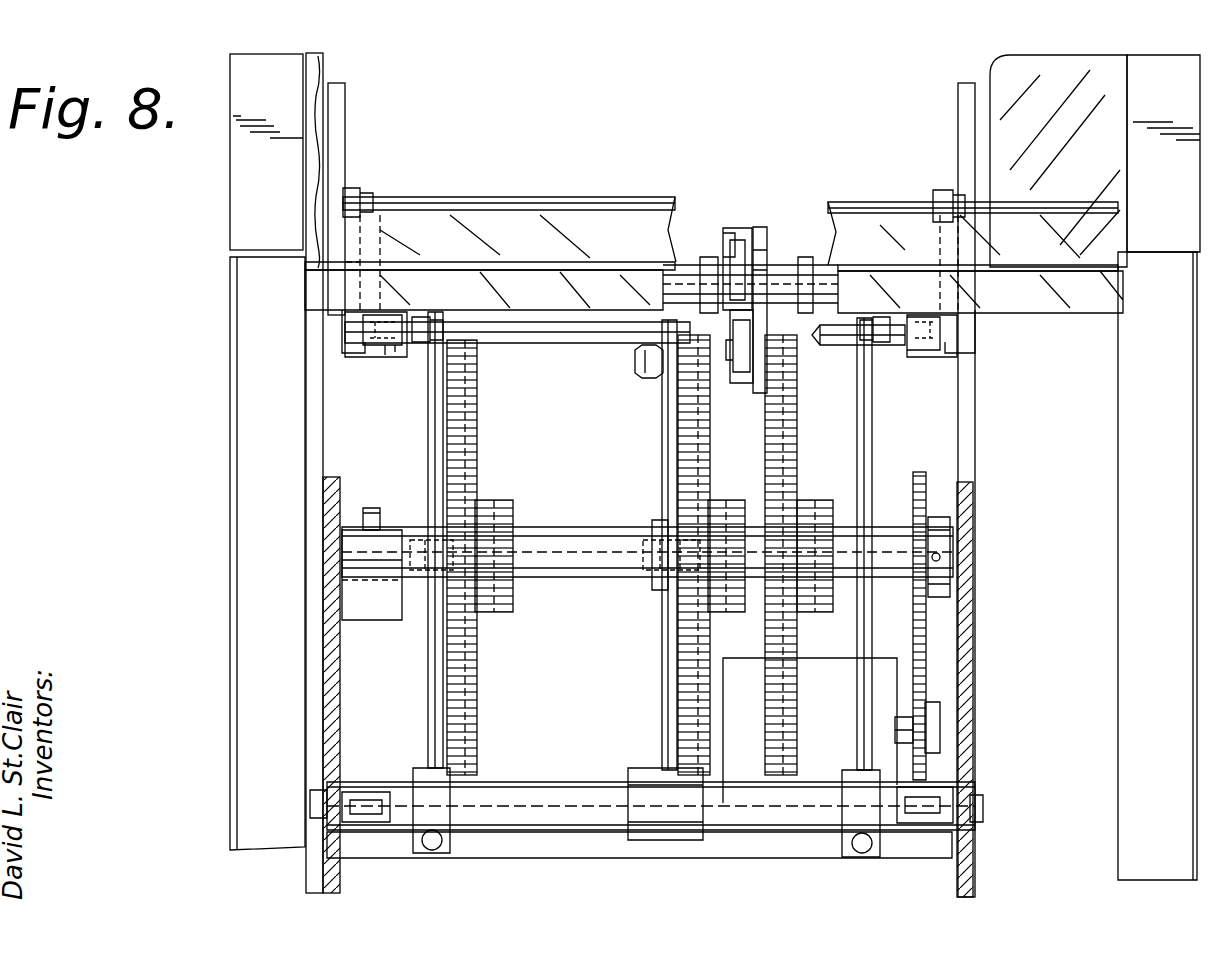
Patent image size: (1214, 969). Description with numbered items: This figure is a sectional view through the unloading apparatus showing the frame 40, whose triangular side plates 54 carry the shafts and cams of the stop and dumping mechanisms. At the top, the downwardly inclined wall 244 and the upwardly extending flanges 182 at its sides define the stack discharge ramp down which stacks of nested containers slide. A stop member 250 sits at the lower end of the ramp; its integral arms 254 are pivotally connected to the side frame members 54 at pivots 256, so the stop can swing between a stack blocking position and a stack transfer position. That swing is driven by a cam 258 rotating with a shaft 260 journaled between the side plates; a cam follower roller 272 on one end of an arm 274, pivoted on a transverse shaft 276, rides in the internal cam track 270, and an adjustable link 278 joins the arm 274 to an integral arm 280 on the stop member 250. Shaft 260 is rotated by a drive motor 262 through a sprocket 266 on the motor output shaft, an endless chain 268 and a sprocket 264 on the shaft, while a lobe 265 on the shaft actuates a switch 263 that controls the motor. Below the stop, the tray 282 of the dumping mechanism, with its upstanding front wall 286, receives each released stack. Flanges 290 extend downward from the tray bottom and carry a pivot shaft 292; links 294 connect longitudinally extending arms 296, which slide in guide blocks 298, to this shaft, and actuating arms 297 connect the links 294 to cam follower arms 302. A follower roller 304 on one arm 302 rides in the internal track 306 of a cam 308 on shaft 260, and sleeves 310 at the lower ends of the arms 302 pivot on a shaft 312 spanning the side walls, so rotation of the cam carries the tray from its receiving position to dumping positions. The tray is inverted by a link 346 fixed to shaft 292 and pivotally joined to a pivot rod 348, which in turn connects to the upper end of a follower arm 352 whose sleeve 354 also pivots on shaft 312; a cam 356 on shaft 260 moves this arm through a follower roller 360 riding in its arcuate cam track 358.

The frame 40 is at (207, 472).
The side plates 54 is at (335, 702).
The flanges 182 is at (303, 91).
The downwardly inclined wall 244 is at (992, 78).
The stop member 250 is at (570, 200).
The arms 254 is at (360, 237).
The pivotal connection 256 is at (372, 205).
The cam 258 is at (790, 440).
The shaft 260 is at (610, 530).
The drive motor 262 is at (815, 668).
The switch 263 is at (358, 600).
The sprocket 264 is at (926, 480).
The lobe 265 is at (373, 505).
The sprocket 266 is at (930, 770).
The endless chain 268 is at (926, 625).
The cam track 270 is at (775, 632).
The cam follower roller 272 is at (710, 405).
The arm 274 is at (785, 352).
The shaft 276 is at (825, 283).
The adjustable link 278 is at (742, 228).
The arm 280 is at (790, 212).
The tray 282 is at (563, 262).
The front wall 286 is at (465, 300).
The flanges 290 is at (355, 325).
The pivot shaft 292 is at (522, 335).
The links 294 is at (658, 364).
The longitudinally extending arms 296 is at (340, 345).
The actuating arms 297 is at (400, 345).
The guide blocks 298 is at (363, 352).
The cam follower arms 302 is at (428, 660).
The cam follower roller 304 is at (505, 548).
The cam track 306 is at (478, 405).
The cam 308 is at (468, 440).
The sleeves 310 is at (425, 832).
The shaft 312 is at (555, 782).
The link 346 is at (665, 380).
The pivot rod 348 is at (640, 372).
The follower arm 352 is at (660, 650).
The sleeve 354 is at (660, 840).
The cam 356 is at (706, 452).
The arcuate cam track 358 is at (680, 465).
The follower roller 360 is at (665, 600).